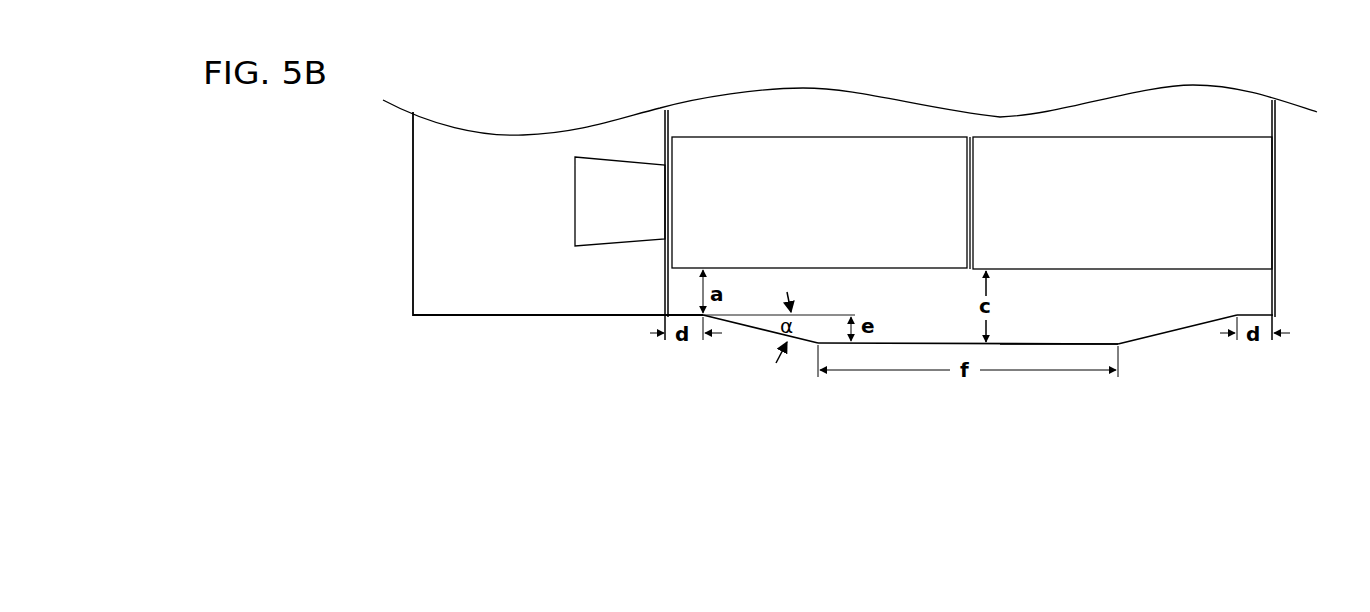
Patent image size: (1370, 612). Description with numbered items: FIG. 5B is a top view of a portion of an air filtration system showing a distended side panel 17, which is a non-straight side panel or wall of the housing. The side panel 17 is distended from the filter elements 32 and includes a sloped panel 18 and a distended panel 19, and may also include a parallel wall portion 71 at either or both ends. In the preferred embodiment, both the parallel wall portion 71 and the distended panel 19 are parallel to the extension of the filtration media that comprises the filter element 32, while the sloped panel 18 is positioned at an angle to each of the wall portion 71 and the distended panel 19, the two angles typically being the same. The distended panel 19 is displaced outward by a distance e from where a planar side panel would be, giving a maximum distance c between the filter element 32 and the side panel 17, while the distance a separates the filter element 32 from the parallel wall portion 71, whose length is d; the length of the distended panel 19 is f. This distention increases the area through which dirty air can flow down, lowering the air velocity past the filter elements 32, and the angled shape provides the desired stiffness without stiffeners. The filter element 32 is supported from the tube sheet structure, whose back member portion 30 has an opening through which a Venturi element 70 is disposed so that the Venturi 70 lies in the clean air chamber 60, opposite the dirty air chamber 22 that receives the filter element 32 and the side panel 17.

The clean air chamber 60 is at (475, 130).
The Venturi element 70 is at (592, 157).
The back member portion 30 is at (670, 127).
The filter element 32 is at (710, 137).
The parallel wall portion 71 is at (1253, 315).
The sloped panel 18 is at (744, 327).
The distended panel 19 is at (902, 345).
The distended side panel 17 is at (1054, 343).
The dirty air chamber 22 is at (1203, 329).